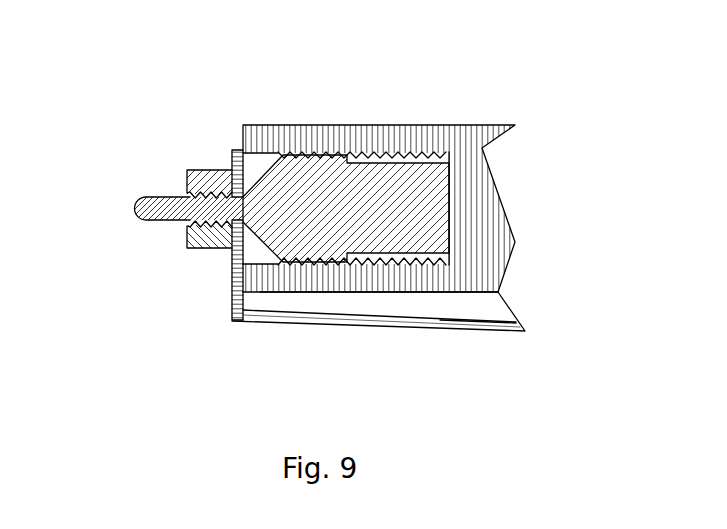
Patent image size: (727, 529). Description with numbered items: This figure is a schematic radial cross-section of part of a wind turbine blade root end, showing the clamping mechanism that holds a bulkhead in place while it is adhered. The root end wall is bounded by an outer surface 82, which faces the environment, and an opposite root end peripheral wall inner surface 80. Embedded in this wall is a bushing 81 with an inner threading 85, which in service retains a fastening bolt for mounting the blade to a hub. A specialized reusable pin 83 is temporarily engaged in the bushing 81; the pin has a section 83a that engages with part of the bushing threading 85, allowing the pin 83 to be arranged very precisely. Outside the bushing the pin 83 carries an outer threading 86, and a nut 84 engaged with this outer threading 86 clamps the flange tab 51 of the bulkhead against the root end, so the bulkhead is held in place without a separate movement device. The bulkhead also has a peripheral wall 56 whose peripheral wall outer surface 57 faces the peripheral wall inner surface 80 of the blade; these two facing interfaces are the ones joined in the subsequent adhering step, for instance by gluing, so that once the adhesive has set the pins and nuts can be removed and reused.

The flange tab 51 is at (233, 147).
The peripheral wall 56 is at (310, 323).
The peripheral wall outer surface 57 is at (474, 307).
The root end peripheral wall inner surface 80 is at (410, 293).
The bushing 81 is at (262, 166).
The outer surface 82 is at (446, 126).
The pin 83 is at (138, 207).
The section 83a is at (341, 219).
The nut 84 is at (207, 175).
The inner threading 85 is at (372, 159).
The outer threading 86 is at (185, 223).